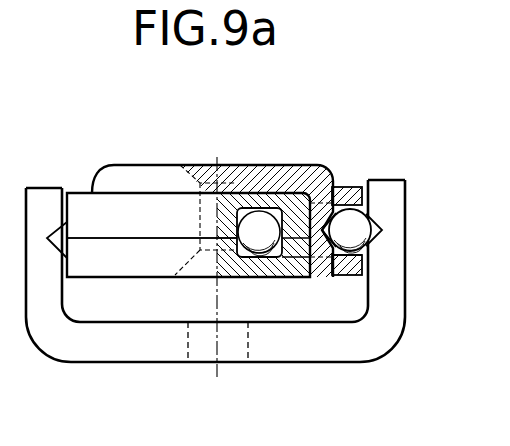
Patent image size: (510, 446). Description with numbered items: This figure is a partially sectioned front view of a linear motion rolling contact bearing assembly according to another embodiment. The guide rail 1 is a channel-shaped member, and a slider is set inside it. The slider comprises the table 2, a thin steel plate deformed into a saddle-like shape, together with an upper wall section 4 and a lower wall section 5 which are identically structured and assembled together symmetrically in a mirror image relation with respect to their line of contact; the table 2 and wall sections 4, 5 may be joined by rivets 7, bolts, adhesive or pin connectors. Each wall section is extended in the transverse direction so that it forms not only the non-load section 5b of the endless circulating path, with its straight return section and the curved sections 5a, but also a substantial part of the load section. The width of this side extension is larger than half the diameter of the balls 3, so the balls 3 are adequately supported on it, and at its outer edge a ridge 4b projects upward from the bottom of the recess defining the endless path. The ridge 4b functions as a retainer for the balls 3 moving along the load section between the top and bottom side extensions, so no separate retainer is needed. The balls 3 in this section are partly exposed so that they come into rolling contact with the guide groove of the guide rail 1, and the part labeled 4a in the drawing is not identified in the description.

The guide rail 1 is at (305, 342).
The table 2 is at (310, 172).
The balls 3 is at (368, 236).
The upper wall section 4 is at (112, 205).
The projection of inner member 4a is at (347, 197).
The ridge 4b is at (363, 208).
The lower wall section 5 is at (120, 266).
The curved sections 5a is at (347, 265).
The non-load section 5b is at (363, 257).
The rivets 7 is at (228, 178).